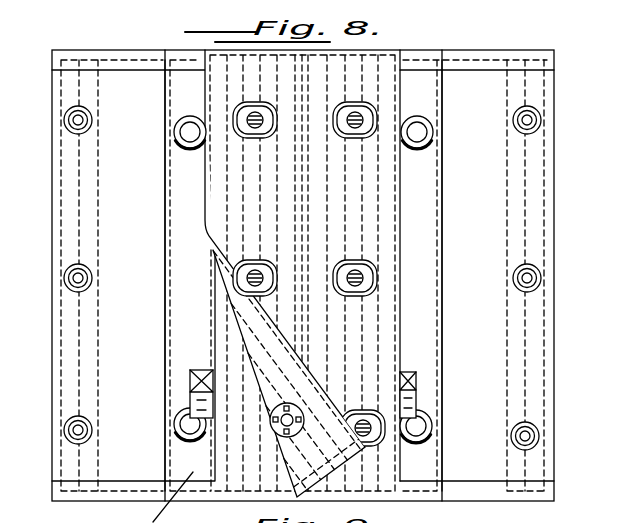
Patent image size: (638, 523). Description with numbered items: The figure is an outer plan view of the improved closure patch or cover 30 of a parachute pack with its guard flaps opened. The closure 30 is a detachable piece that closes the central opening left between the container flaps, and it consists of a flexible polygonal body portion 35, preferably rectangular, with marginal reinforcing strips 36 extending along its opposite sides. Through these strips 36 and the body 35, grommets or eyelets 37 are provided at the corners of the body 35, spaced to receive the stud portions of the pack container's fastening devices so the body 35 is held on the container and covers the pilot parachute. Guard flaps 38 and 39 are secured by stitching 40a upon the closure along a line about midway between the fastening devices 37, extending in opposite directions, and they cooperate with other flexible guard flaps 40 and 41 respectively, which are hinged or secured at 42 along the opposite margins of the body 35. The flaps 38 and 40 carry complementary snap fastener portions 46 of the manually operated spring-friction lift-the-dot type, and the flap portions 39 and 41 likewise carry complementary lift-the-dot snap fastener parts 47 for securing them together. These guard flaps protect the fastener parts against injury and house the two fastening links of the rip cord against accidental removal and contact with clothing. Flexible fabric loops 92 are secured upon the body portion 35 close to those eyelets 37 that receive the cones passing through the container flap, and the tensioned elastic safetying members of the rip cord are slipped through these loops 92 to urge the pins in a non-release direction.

The closure piece 30 is at (175, 331).
The body portion 35 is at (257, 465).
The marginal reinforcing strips 36 is at (422, 467).
The grommets or eyelets 37 is at (190, 149).
The guard flap 38 is at (300, 273).
The guard flap 39 is at (387, 331).
The guard flap 40 is at (115, 467).
The stitching 40a is at (306, 232).
The guard flap 41 is at (497, 468).
The hinge 42 is at (165, 380).
The snap fastener portions 46 is at (92, 113).
The snap fastener parts 47 is at (515, 115).
The fabric loops 92 is at (204, 403).